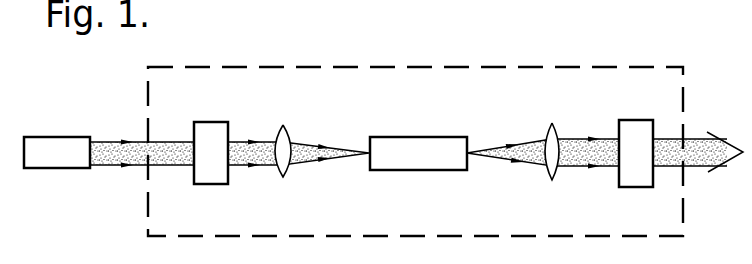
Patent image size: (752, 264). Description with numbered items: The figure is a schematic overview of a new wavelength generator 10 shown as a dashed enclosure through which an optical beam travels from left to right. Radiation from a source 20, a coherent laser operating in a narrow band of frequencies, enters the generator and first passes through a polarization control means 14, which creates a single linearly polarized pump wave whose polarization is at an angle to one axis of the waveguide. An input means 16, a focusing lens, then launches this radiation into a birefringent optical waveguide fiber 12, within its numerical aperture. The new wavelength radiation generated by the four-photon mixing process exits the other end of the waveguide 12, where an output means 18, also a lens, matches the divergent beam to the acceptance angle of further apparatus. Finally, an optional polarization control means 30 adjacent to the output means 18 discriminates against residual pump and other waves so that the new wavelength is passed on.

The new wavelength generator 10 is at (645, 66).
The birefringent optical waveguide fiber 12 is at (372, 172).
The polarization control means 14 is at (194, 185).
The input means 16 is at (283, 178).
The output means 18 is at (552, 123).
The source 20 is at (25, 169).
The polarization control means 30 is at (621, 187).